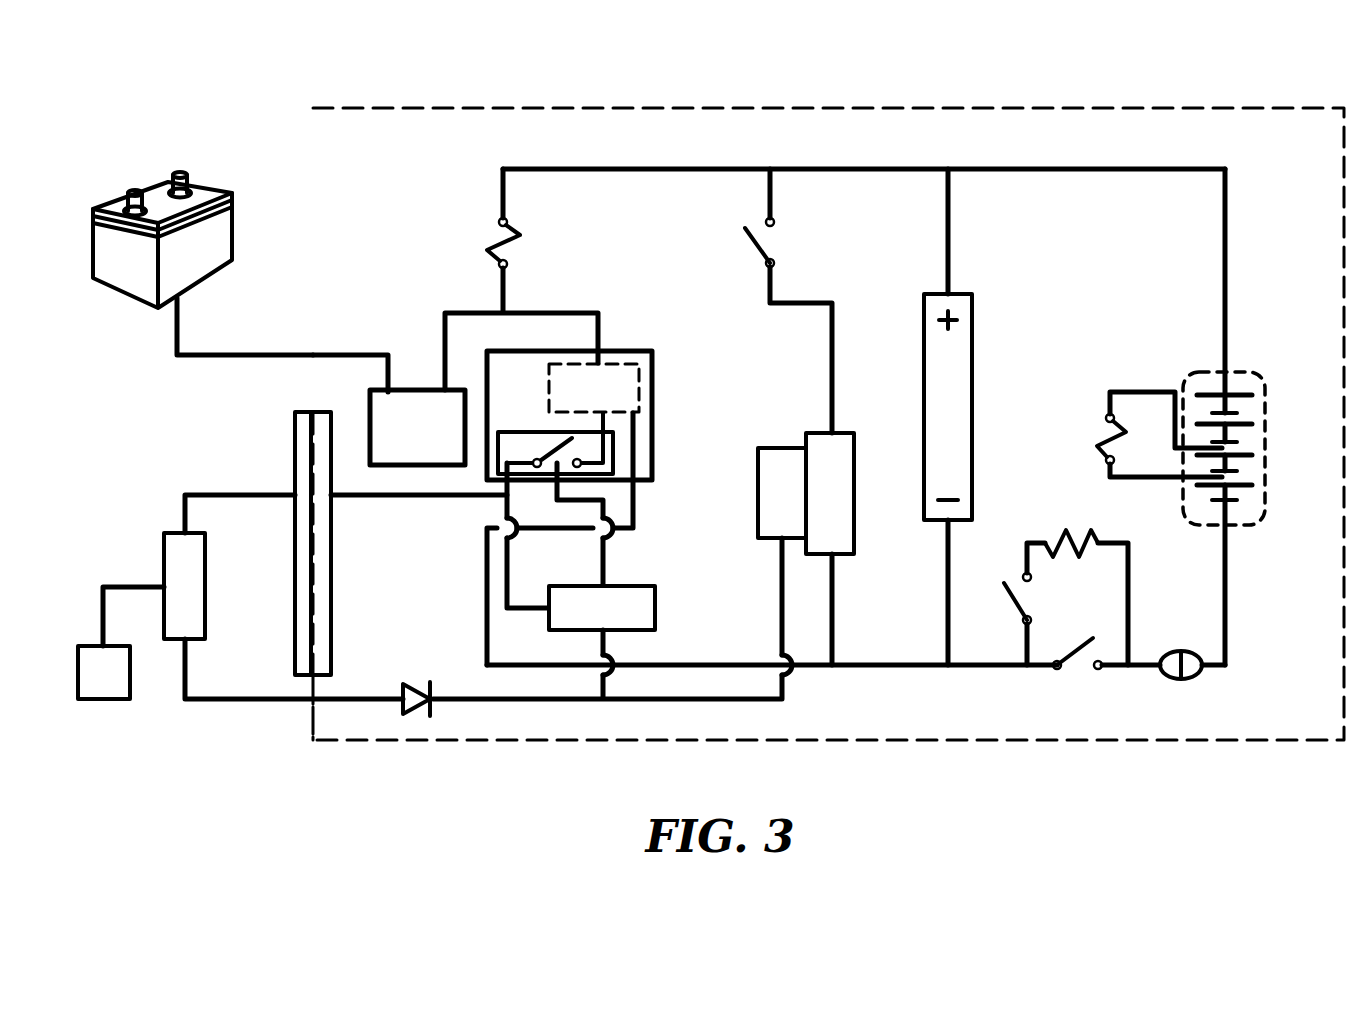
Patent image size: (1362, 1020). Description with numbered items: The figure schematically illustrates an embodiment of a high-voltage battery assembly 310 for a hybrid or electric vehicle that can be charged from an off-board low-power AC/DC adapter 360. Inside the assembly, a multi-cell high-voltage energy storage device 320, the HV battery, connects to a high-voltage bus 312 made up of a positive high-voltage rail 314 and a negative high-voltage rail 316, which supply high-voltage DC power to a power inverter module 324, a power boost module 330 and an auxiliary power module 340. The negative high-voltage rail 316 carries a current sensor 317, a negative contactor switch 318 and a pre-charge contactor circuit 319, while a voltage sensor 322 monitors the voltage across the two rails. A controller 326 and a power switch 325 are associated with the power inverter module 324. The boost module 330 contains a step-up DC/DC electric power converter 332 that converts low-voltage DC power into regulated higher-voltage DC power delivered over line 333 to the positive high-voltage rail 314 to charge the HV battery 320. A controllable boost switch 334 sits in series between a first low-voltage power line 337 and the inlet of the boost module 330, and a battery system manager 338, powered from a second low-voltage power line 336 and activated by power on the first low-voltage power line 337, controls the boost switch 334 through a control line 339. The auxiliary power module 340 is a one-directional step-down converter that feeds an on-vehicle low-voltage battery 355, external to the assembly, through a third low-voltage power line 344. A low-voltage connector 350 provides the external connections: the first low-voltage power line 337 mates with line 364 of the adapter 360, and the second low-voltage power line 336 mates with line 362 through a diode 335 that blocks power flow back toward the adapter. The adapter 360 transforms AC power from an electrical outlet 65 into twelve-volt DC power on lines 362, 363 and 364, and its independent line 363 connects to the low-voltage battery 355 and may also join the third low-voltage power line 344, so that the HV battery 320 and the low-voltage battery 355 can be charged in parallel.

The high-voltage battery assembly 310 is at (1117, 108).
The high-voltage bus 312 is at (1227, 236).
The positive high-voltage rail 314 is at (1086, 170).
The negative high-voltage rail 316 is at (881, 665).
The current sensor 317 is at (1196, 680).
The negative contactor switch 318 is at (1077, 675).
The pre-charge contactor circuit 319 is at (1067, 533).
The multi-cell high-voltage energy storage device 320 is at (1242, 372).
The voltage sensor 322 is at (973, 397).
The power inverter module 324 is at (855, 520).
The power switch 325 is at (773, 246).
The controller 326 is at (781, 448).
The power boost module 330 is at (635, 352).
The step-up DC/DC electric power converter 332 is at (594, 388).
The line 333 is at (548, 312).
The controllable boost switch 334 is at (614, 452).
The diode 335 is at (420, 715).
The second low-voltage power line 336 is at (449, 699).
The first low-voltage power line 337 is at (353, 497).
The battery system manager 338 is at (655, 608).
The control line 339 is at (604, 568).
The auxiliary power module 340 is at (423, 390).
The third low-voltage power line 344 is at (332, 352).
The low-voltage connector 350 is at (306, 677).
The on-vehicle low-voltage battery 355 is at (205, 182).
The low-power AC/DC adapter 360 is at (163, 545).
The line 362 is at (263, 699).
The independent line 363 is at (177, 323).
The line 364 is at (255, 494).
The electrical outlet 65 is at (104, 672).